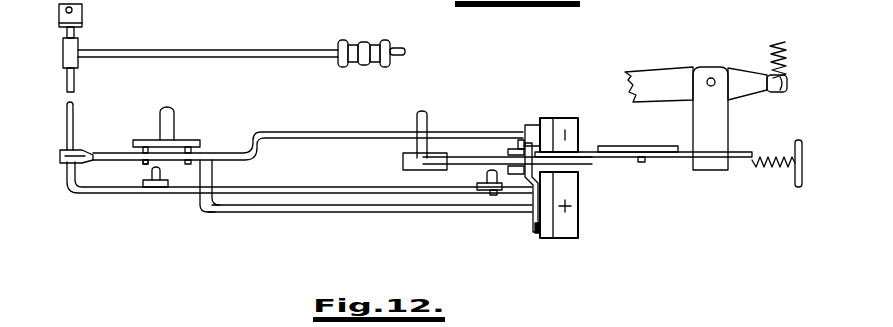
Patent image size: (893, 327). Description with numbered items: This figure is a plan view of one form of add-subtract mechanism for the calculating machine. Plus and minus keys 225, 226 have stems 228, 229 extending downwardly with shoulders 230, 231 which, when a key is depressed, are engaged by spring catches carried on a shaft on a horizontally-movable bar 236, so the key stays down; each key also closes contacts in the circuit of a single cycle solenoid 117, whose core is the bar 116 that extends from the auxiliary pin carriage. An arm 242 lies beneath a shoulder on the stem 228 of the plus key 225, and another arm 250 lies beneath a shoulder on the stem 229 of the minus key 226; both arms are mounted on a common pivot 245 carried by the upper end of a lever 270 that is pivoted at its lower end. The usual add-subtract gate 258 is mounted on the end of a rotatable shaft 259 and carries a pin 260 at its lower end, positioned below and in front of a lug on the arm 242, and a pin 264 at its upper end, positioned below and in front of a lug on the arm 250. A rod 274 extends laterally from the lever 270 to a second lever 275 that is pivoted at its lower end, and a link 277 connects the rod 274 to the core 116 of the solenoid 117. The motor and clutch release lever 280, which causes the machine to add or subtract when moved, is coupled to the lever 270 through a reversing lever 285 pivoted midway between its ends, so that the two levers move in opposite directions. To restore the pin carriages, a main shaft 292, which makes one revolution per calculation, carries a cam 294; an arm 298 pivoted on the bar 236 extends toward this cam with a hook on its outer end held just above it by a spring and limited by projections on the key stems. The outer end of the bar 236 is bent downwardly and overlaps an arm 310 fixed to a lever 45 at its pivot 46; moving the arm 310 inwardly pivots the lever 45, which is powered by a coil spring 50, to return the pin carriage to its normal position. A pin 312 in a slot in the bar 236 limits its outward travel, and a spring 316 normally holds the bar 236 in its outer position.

The lever 45 is at (650, 70).
The pivot 46 is at (711, 77).
The coil spring 50 is at (767, 50).
The bar 116 is at (395, 56).
The single cycle solenoid 117 is at (378, 42).
The plus key 225 is at (565, 238).
The minus key 226 is at (562, 118).
The stem 228 is at (537, 233).
The stem 229 is at (533, 118).
The shoulder 230 is at (525, 200).
The shoulder 231 is at (527, 152).
The horizontally-movable bar 236 is at (585, 152).
The arm 242 is at (292, 212).
The pivot 245 is at (67, 132).
The arm 250 is at (332, 130).
The add-subtract gate 258 is at (174, 141).
The rotatable shaft 259 is at (172, 118).
The pin 260 is at (143, 163).
The pin 264 is at (188, 197).
The lever 270 is at (57, 165).
The rod 274 is at (73, 113).
The lever 275 is at (78, 32).
The link 277 is at (192, 48).
The motor and clutch release lever 280 is at (480, 188).
The reversing lever 285 is at (152, 190).
The main shaft 292 is at (415, 122).
The cam 294 is at (403, 162).
The arm 298 is at (453, 157).
The arm 310 is at (717, 133).
The pin 312 is at (642, 162).
The spring 316 is at (755, 172).